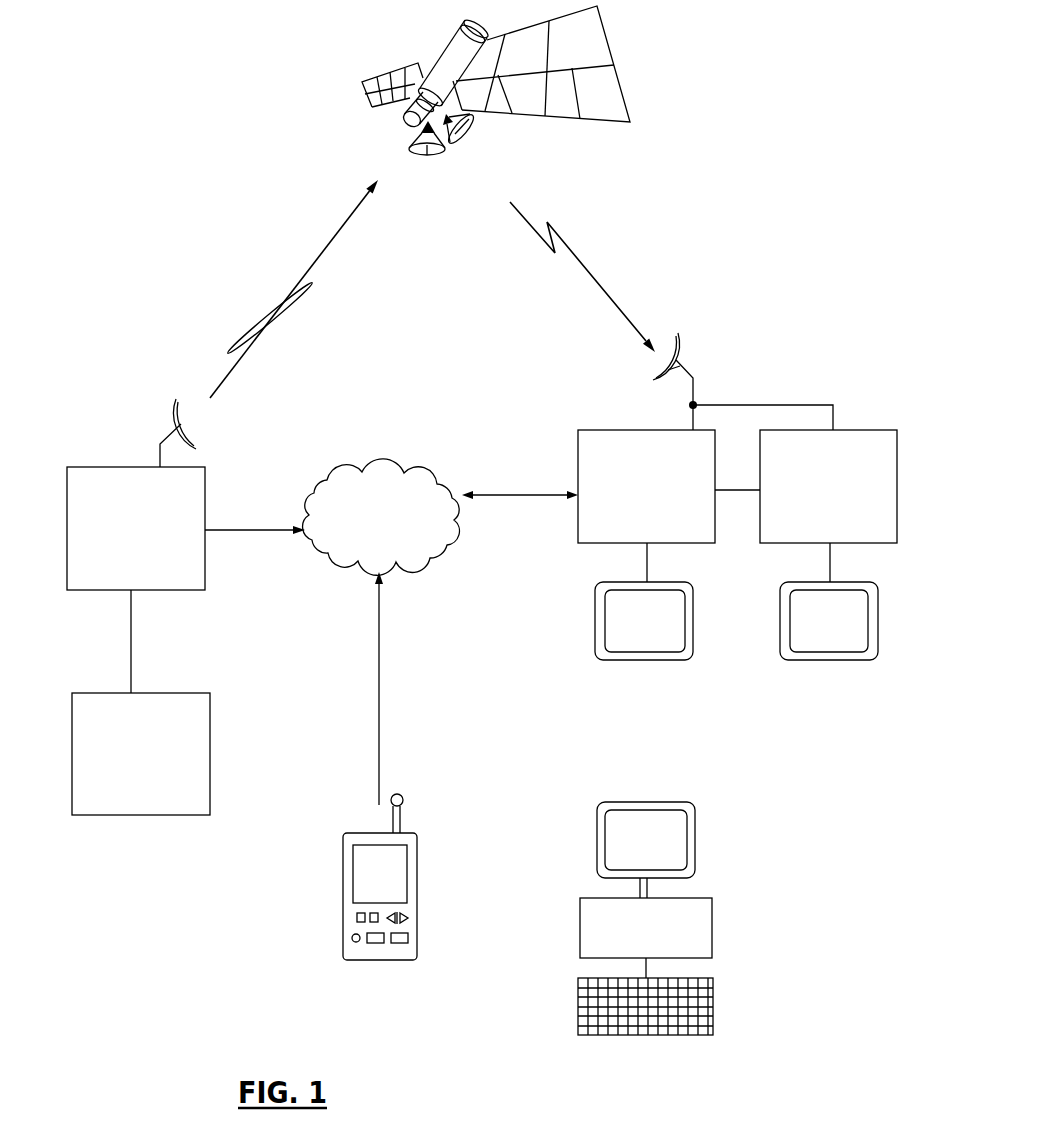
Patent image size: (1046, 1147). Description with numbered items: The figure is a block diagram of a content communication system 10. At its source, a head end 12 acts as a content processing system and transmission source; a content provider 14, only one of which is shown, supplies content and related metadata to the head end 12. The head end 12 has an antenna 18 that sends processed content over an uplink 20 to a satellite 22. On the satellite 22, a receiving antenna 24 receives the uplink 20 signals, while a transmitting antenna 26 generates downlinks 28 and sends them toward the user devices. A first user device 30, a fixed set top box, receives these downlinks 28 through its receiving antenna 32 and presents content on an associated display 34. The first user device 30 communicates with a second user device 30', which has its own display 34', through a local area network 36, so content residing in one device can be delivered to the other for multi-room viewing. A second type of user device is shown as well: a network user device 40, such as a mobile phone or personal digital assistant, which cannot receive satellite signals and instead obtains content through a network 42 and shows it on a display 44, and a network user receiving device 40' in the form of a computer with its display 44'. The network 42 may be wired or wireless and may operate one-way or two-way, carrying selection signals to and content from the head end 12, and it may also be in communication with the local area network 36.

The communication system 10 is at (712, 95).
The head end 12 is at (98, 467).
The content provider 14 is at (210, 758).
The antenna 18 is at (185, 437).
The uplink 20 is at (335, 236).
The satellite 22 is at (445, 50).
The receiving antenna 24 is at (433, 155).
The transmitting antenna 26 is at (466, 140).
The downlinks 28 is at (598, 283).
The first user device 30 is at (700, 480).
The second user device 30' is at (833, 480).
The receiving antenna 32 is at (684, 345).
The display 34 is at (644, 640).
The display 34' is at (829, 640).
The network 36 is at (733, 492).
The network user device 40 is at (356, 877).
The network user receiving device 40' is at (667, 966).
The network 42 is at (323, 570).
The display 44 is at (351, 875).
The display 44' is at (646, 830).